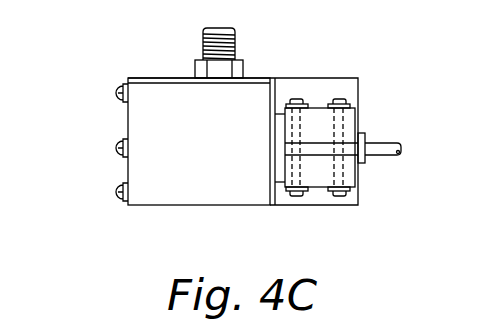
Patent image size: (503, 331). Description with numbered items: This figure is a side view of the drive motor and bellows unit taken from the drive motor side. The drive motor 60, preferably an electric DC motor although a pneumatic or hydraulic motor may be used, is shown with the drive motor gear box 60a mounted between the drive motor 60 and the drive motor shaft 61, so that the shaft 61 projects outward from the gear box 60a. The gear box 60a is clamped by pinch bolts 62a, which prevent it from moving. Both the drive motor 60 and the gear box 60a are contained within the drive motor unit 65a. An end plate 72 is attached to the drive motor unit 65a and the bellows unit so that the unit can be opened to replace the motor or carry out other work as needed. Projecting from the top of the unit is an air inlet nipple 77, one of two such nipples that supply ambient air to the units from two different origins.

The drive motor 60 is at (190, 148).
The drive motor gear box 60a is at (315, 168).
The drive motor shaft 61 is at (392, 143).
The pinch bolts 62a is at (292, 99).
The drive motor unit 65a is at (140, 78).
The end plate 72 is at (128, 130).
The air inlet nipple 77 is at (222, 28).